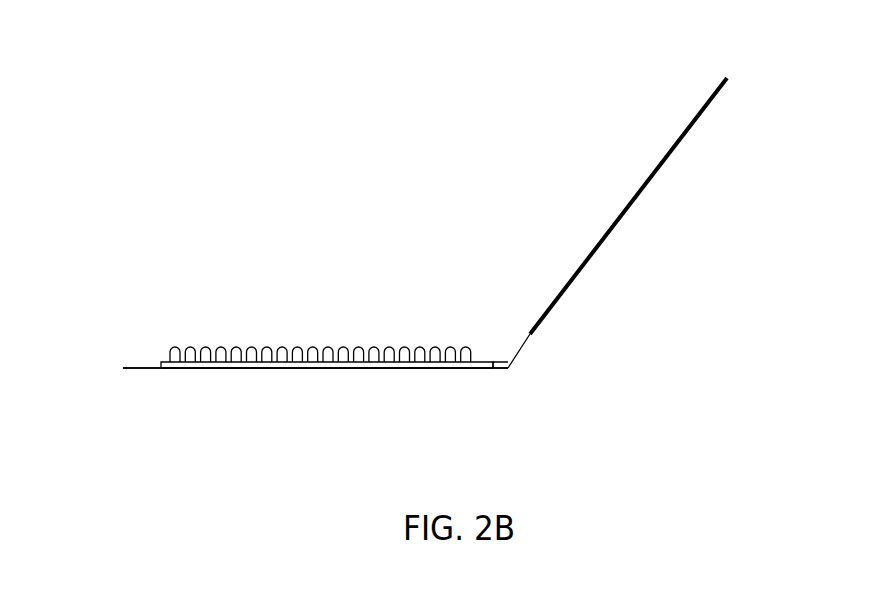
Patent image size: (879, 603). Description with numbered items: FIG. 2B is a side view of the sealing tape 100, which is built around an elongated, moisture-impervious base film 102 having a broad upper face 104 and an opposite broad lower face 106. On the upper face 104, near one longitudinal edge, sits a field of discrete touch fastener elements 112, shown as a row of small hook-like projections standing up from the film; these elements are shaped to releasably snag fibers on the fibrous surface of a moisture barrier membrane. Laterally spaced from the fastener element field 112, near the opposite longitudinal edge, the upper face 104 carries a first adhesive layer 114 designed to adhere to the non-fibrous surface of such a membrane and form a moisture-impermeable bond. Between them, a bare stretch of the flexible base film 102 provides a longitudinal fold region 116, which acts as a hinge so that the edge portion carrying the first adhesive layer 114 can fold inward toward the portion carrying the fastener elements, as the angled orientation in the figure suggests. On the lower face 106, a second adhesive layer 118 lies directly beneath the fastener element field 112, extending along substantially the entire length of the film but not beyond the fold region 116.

The sealing tape 100 is at (760, 127).
The base film 102 is at (721, 71).
The upper face 104 is at (146, 367).
The lower face 106 is at (161, 369).
The fastener element field 112 is at (345, 321).
The first adhesive layer 114 is at (536, 305).
The fold region 116 is at (500, 354).
The second adhesive layer 118 is at (336, 378).